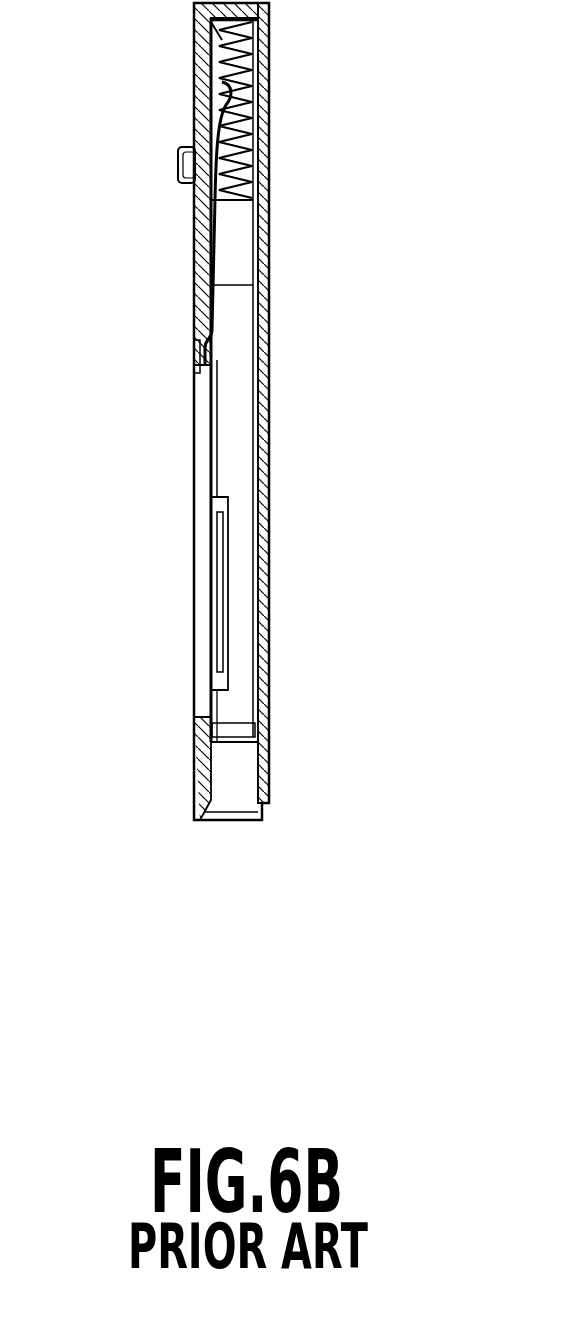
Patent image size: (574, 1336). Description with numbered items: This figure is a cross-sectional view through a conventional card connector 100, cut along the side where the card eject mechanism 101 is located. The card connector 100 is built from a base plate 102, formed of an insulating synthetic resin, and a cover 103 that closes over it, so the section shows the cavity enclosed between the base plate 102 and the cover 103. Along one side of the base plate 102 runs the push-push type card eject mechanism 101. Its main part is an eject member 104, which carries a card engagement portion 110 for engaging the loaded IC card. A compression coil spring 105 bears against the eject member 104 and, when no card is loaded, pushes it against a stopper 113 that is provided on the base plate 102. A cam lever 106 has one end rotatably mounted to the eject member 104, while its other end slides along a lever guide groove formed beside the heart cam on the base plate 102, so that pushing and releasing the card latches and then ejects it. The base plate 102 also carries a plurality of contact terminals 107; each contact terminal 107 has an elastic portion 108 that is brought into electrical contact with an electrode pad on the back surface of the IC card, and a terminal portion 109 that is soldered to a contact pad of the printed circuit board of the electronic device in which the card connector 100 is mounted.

The card connector 100 is at (297, 443).
The card eject mechanism 101 is at (232, 593).
The base plate 102 is at (200, 758).
The cover 103 is at (268, 705).
The eject member 104 is at (250, 338).
The compression coil spring 105 is at (210, 44).
The cam lever 106 is at (228, 598).
The contact terminal 107 is at (210, 292).
The elastic portion 108 is at (240, 112).
The terminal portion 109 is at (200, 352).
The card engagement portion 110 is at (242, 202).
The stopper 113 is at (233, 812).